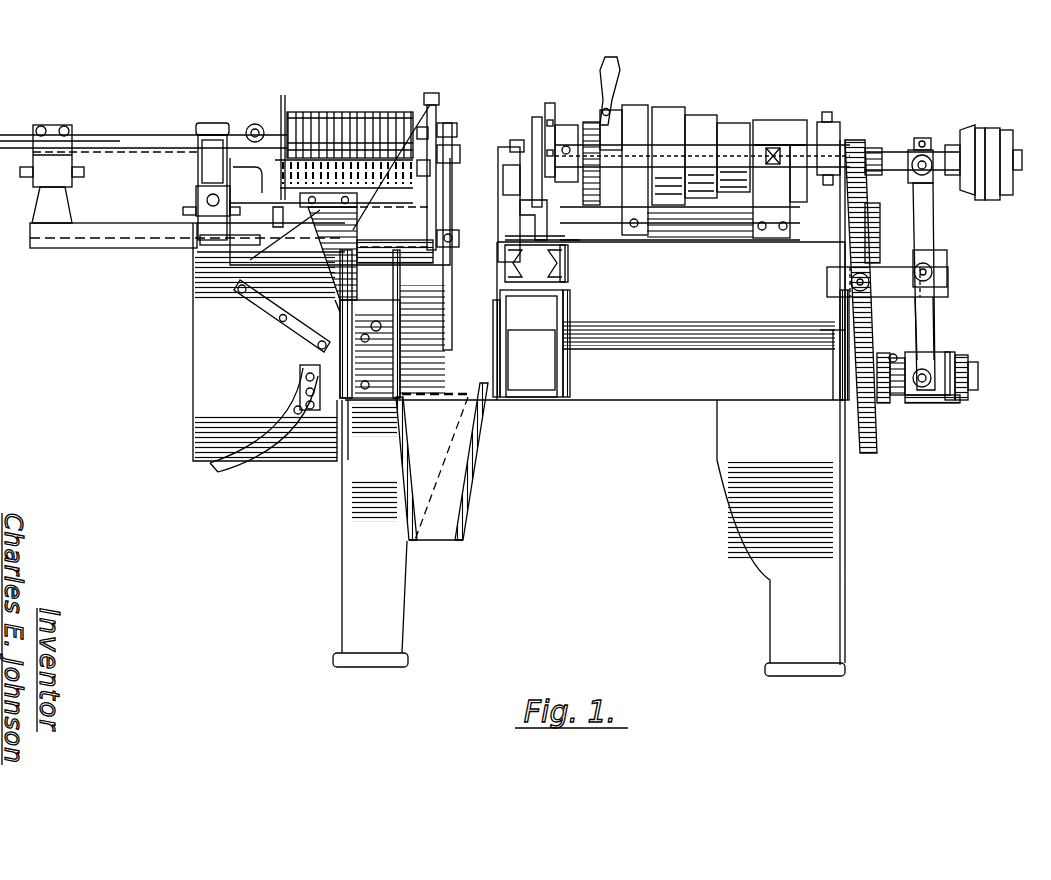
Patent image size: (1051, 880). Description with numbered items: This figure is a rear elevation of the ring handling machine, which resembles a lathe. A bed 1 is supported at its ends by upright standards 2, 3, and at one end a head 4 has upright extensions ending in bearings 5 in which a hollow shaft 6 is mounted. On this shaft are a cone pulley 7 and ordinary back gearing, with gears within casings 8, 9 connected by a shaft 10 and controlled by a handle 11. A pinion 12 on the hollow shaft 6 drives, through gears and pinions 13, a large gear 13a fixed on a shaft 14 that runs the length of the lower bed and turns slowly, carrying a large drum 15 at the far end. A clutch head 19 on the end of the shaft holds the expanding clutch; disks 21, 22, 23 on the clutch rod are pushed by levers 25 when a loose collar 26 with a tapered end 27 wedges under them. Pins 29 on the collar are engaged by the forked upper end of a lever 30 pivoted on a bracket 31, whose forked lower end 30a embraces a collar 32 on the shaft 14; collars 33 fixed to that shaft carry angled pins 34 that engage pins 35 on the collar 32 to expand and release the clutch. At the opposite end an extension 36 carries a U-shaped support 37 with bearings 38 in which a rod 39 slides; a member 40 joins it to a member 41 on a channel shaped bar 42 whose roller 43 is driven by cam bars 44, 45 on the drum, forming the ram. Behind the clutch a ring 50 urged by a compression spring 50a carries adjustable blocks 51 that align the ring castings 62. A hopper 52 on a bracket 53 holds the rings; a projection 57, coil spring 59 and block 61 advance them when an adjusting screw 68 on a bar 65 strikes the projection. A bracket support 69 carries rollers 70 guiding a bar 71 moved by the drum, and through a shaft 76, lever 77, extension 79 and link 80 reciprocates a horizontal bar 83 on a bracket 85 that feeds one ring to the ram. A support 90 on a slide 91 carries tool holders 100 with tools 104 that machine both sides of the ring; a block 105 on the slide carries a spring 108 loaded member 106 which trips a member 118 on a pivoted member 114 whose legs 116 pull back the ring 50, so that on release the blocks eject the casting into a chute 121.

The bed 1 is at (650, 392).
The upright standard 2 is at (387, 593).
The upright standard 3 is at (773, 540).
The head 4 is at (730, 230).
The bearings 5 is at (613, 137).
The hollow shaft 6 is at (895, 170).
The cone pulley 7 is at (730, 127).
The gear casing 8 is at (777, 130).
The gear casing 9 is at (667, 110).
The shaft 10 is at (733, 153).
The handle 11 is at (612, 115).
The pinion 12 is at (860, 145).
The gears and pinions 13 is at (880, 232).
The large gear 13a is at (873, 333).
The shaft 14 is at (895, 395).
The drum 15 is at (200, 387).
The clutch head 19 is at (500, 172).
The disk 21 is at (1005, 140).
The friction disk 22 is at (1002, 130).
The disk 23 is at (988, 130).
The levers 25 is at (967, 147).
The collar 26 is at (912, 160).
The tapered end 27 is at (945, 148).
The pins 29 is at (923, 166).
The lever 30 is at (940, 252).
The forked lower end 30a is at (932, 348).
The bracket 31 is at (923, 293).
The collar 32 is at (933, 403).
The collar 33 is at (963, 387).
The pin 34 is at (950, 360).
The pins 35 is at (948, 400).
The extension 36 is at (200, 216).
The U-shaped support 37 is at (212, 177).
The bearings 38 is at (212, 123).
The rod 39 is at (117, 136).
The member 40 is at (177, 150).
The member 41 is at (55, 209).
The channel shaped bar 42 is at (127, 237).
The roller 43 is at (220, 238).
The cam bar 44 is at (242, 463).
The cam bar 45 is at (335, 310).
The ring 50 is at (578, 122).
The compression spring 50a is at (607, 65).
The adjustable block 51 is at (557, 137).
The hopper 52 is at (313, 113).
The bracket 53 is at (268, 303).
The projection 57 is at (328, 265).
The coil spring 59 is at (273, 215).
The block 61 is at (280, 138).
The rings 62 is at (333, 112).
The bar 65 is at (213, 197).
The adjusting screw 68 is at (190, 224).
The bracket support 69 is at (381, 328).
The rollers 70 is at (352, 400).
The bar 71 is at (335, 378).
The shaft 76 is at (497, 363).
The lever 77 is at (557, 310).
The extension 79 is at (453, 208).
The link 80 is at (457, 127).
The horizontal bar 83 is at (460, 152).
The bracket 85 is at (398, 197).
The support 90 is at (459, 238).
The slide 91 is at (558, 262).
The tool holders 100 is at (503, 162).
The tool 104 is at (518, 150).
The block 105 is at (558, 235).
The member 106 is at (570, 238).
The coil spring 108 is at (535, 263).
The member 114 is at (550, 213).
The legs 116 is at (592, 160).
The member 118 is at (663, 230).
The chute 121 is at (453, 445).